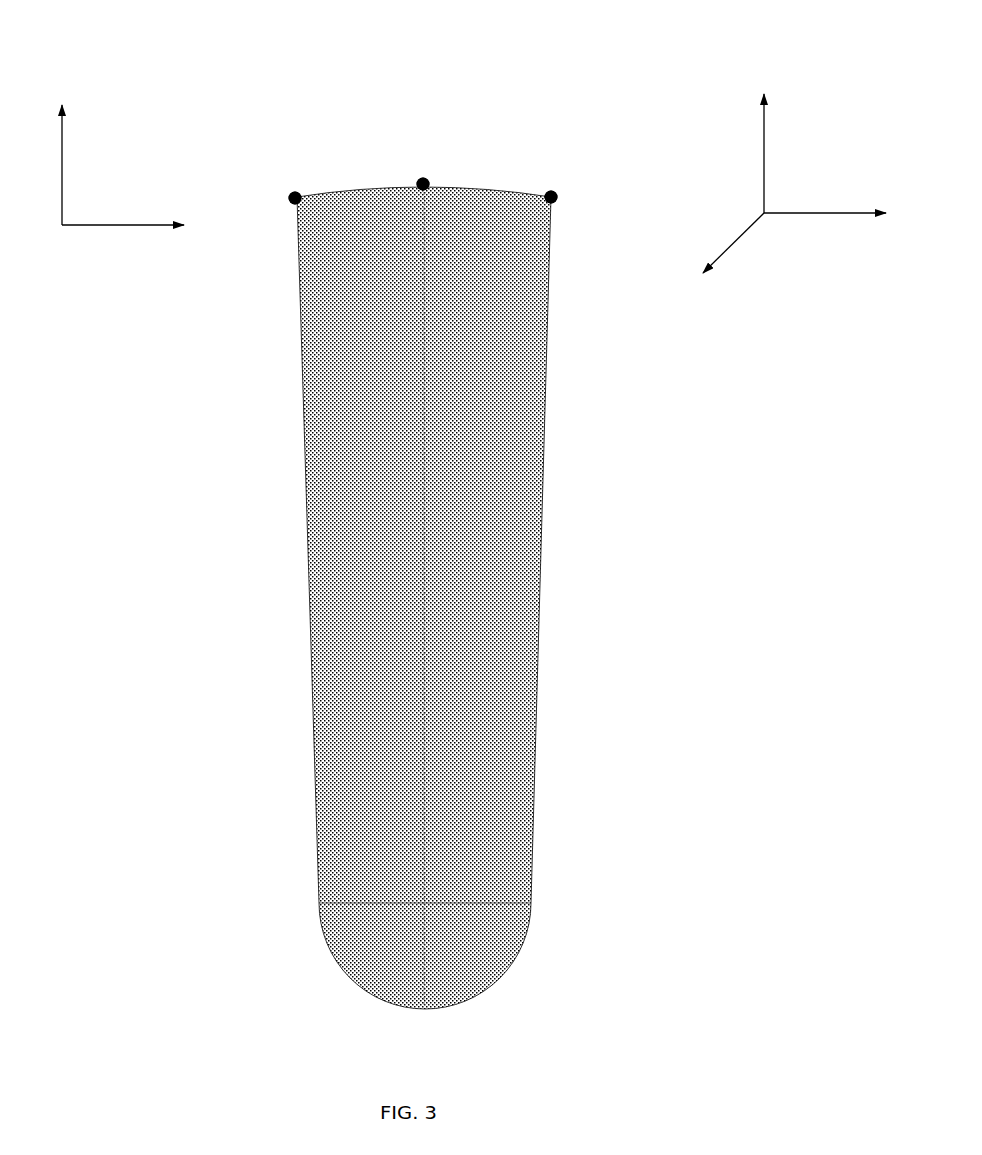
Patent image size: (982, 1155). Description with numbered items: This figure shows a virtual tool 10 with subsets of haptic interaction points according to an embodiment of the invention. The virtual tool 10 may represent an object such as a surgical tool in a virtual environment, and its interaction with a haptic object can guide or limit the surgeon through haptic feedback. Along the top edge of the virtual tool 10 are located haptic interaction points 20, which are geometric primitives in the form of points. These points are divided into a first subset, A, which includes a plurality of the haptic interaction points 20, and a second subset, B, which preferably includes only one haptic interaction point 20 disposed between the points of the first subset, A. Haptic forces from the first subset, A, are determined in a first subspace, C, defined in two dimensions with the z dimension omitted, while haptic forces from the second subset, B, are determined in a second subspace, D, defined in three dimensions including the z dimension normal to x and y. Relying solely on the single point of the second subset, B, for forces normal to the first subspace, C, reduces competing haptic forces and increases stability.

The virtual tool 10 is at (265, 607).
The haptic interaction points 20 is at (543, 171).
The first subset A is at (533, 218).
The second subset B is at (438, 195).
The first subspace C is at (112, 181).
The second subspace D is at (795, 188).